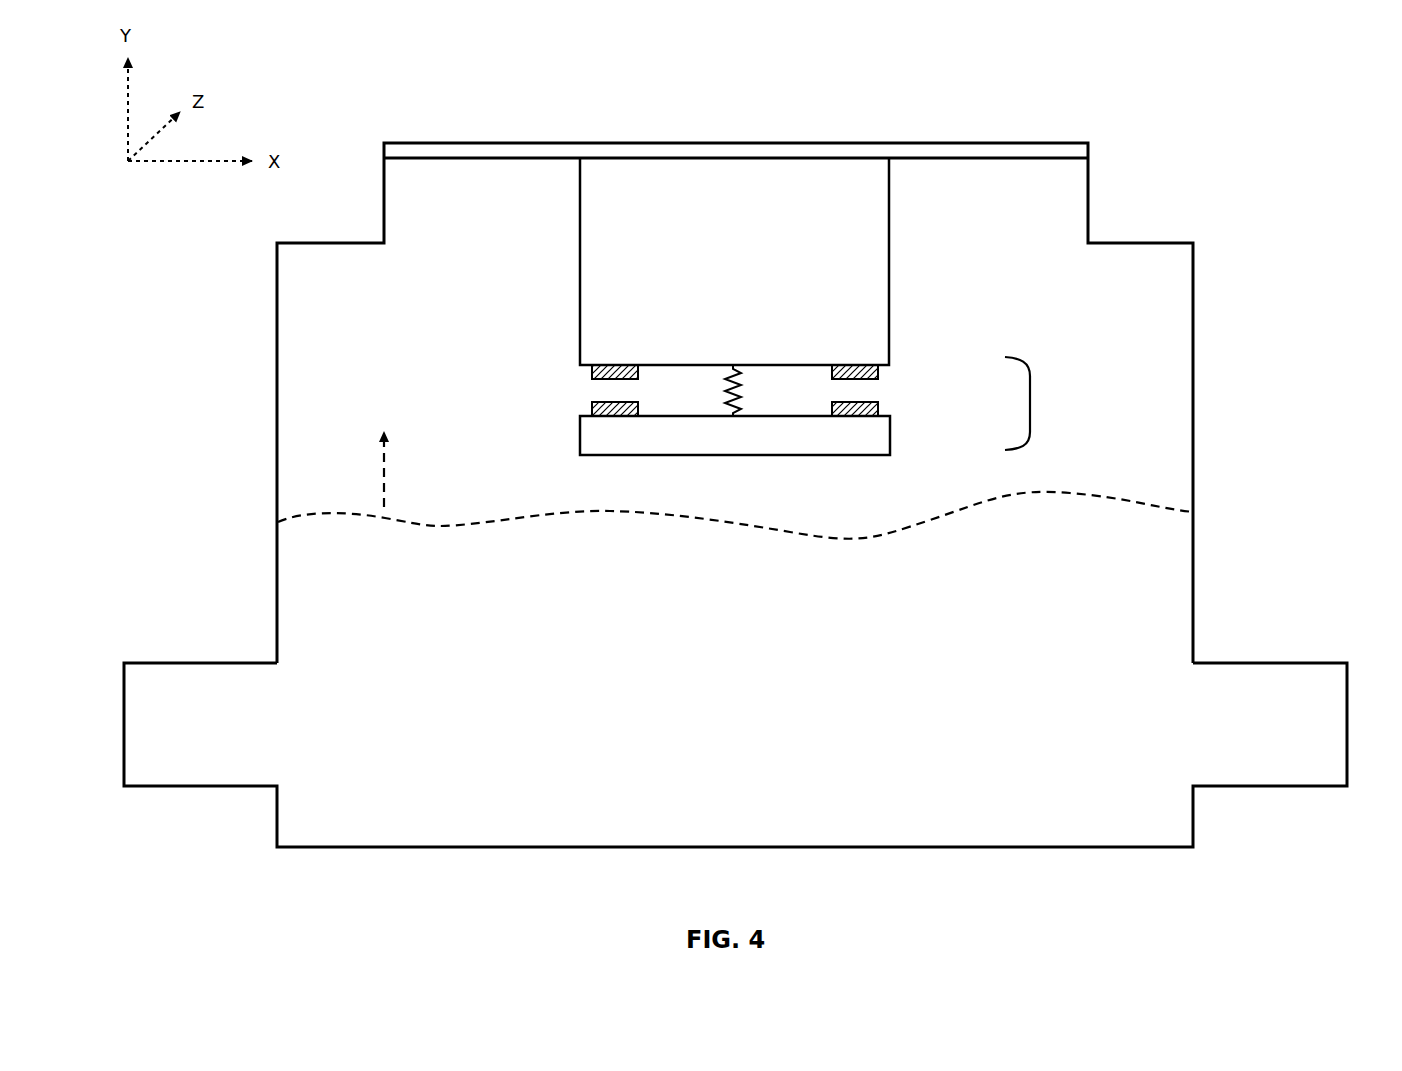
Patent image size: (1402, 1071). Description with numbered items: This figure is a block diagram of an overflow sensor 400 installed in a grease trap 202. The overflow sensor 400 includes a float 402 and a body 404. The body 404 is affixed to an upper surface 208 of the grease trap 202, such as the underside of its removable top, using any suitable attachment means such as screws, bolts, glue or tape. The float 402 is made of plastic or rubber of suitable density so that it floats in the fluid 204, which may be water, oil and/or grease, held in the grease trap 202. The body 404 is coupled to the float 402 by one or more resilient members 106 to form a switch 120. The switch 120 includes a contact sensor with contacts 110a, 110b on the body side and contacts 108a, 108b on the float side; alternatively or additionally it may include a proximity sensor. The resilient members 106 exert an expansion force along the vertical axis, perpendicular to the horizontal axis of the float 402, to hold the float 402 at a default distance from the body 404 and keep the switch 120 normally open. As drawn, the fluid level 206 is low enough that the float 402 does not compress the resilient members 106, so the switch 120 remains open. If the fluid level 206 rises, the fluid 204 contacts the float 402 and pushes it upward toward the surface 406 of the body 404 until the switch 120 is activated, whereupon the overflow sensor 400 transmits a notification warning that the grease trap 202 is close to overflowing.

The grease trap 202 is at (1193, 357).
The fluid 204 is at (735, 755).
The upper surface 208 is at (1057, 143).
The fluid level 206 is at (1148, 503).
The overflow sensor 400 is at (546, 304).
The body 404 is at (734, 261).
The float 402 is at (735, 435).
The contact 110a is at (591, 372).
The contact 110b is at (878, 372).
The contact 108a is at (591, 410).
The contact 108b is at (878, 410).
The resilient member 106 is at (758, 381).
The surface 406 is at (703, 371).
The switch 120 is at (1030, 403).